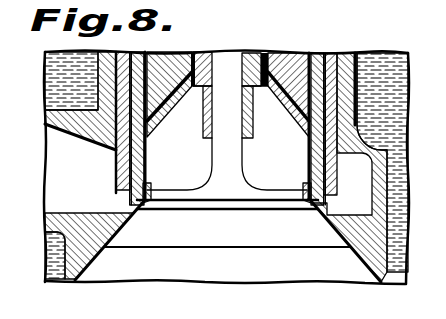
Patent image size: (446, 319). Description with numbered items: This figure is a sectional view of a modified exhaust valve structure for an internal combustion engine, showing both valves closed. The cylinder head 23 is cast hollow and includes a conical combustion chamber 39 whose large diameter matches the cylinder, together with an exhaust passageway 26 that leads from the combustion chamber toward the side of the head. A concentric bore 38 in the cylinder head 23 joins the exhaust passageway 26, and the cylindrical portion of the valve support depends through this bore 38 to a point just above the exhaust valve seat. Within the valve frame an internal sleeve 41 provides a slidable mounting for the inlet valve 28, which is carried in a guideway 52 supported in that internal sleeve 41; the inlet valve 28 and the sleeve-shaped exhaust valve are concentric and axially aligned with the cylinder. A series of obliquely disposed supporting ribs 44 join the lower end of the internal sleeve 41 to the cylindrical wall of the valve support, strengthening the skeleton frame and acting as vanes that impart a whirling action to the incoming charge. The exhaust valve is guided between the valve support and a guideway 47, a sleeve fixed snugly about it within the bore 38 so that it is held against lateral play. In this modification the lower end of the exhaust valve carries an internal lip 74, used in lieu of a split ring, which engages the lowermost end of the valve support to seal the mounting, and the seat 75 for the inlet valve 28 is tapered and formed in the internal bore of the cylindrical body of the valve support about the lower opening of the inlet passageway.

The cylinder head 23 is at (44, 110).
The exhaust passageway 26 is at (89, 215).
The inlet valve 28 is at (222, 200).
The concentric bore 38 is at (345, 56).
The combustion chamber 39 is at (223, 268).
The internal sleeve 41 is at (258, 54).
The supporting ribs 44 is at (169, 88).
The guideway 47 is at (117, 172).
The inlet valve guideway 52 is at (205, 109).
The internal lip 74 is at (133, 208).
The inlet valve seat 75 is at (144, 192).